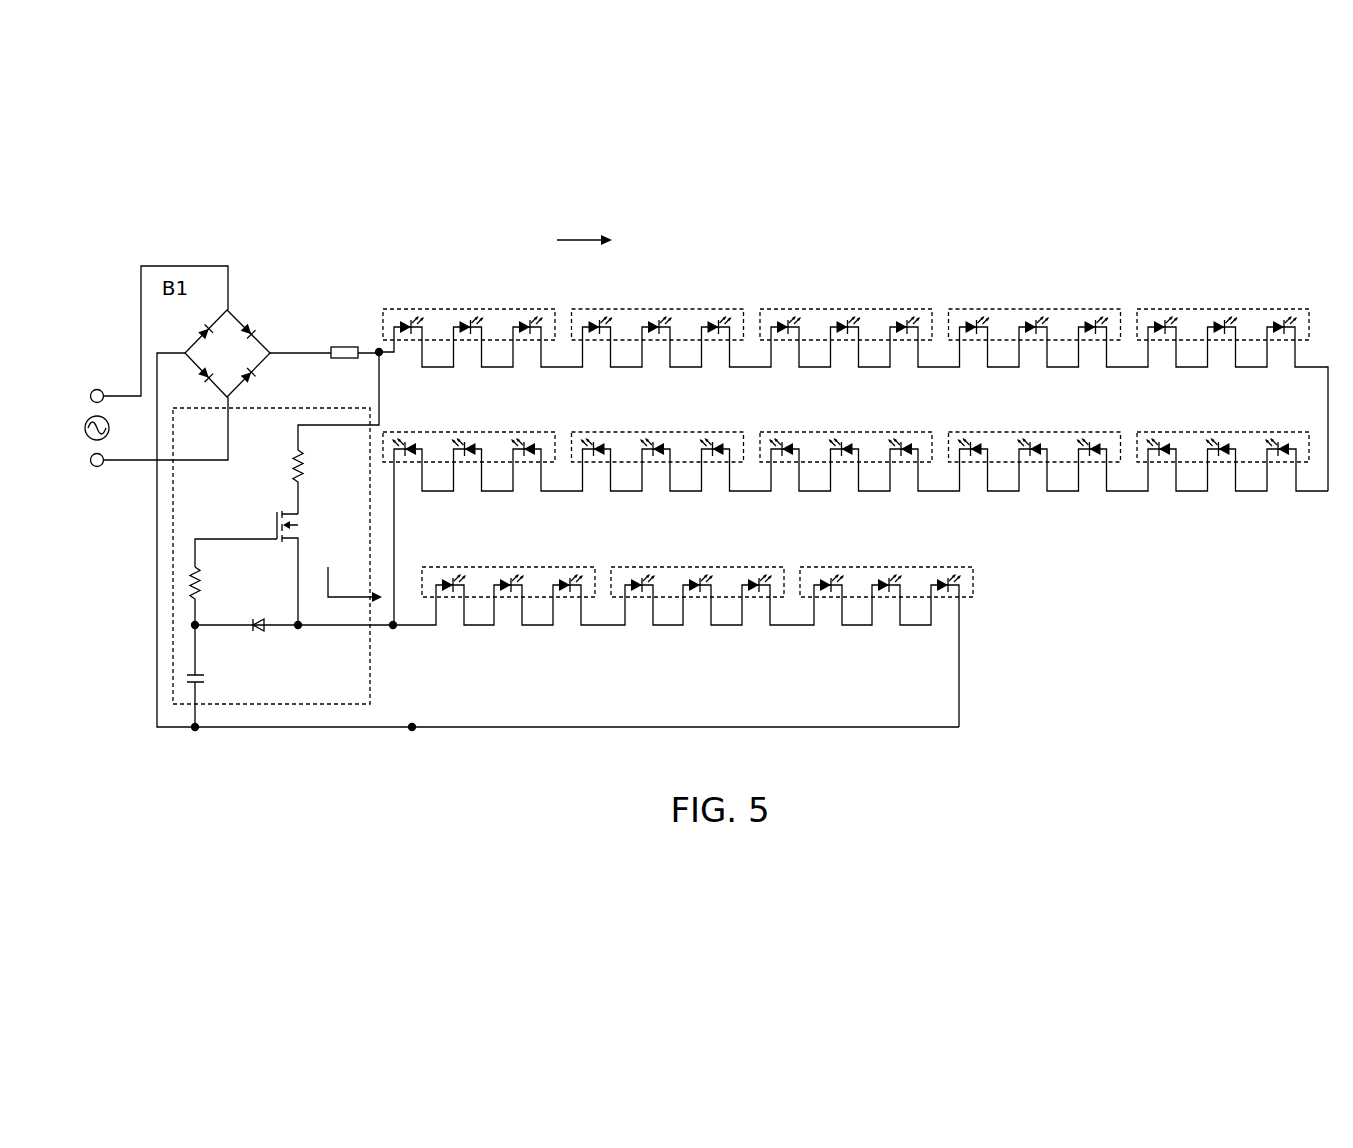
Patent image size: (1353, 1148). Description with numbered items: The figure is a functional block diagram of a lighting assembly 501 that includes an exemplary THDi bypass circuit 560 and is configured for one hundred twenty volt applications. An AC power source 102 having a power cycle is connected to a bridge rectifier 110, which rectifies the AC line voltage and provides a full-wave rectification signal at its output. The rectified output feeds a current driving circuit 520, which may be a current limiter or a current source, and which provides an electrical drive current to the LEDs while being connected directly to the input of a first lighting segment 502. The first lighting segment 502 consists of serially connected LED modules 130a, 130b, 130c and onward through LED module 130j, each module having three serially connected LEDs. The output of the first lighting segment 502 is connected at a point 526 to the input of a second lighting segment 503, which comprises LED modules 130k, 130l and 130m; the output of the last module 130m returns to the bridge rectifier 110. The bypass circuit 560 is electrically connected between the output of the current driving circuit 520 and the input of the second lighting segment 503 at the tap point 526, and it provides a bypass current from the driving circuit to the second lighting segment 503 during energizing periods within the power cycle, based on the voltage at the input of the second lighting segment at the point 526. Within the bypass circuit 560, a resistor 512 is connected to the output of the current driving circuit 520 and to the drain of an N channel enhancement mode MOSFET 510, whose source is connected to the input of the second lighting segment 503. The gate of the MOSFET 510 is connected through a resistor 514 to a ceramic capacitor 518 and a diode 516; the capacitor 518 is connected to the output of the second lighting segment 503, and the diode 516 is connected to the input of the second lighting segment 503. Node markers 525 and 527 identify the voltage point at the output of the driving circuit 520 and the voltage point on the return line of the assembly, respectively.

The AC power source 102 is at (110, 426).
The bridge rectifier 110 is at (234, 311).
The LED module 130a is at (471, 309).
The LED module 130b is at (655, 309).
The LED module 130c is at (840, 309).
The LED module 130j is at (478, 432).
The LED module 130k is at (515, 567).
The LED module 130l is at (683, 567).
The LED module 130m is at (896, 567).
The lighting assembly 501 is at (853, 336).
The first lighting segment 502 is at (853, 504).
The second lighting segment 503 is at (722, 621).
The MOSFET 510 is at (282, 526).
The resistor 512 is at (292, 466).
The resistor 514 is at (188, 582).
The diode 516 is at (263, 632).
The capacitor 518 is at (188, 678).
The current driving circuit 520 is at (338, 345).
The node V1 525 is at (380, 354).
The point 526 is at (393, 626).
The node V3 527 is at (412, 727).
The bypass circuit 560 is at (248, 592).